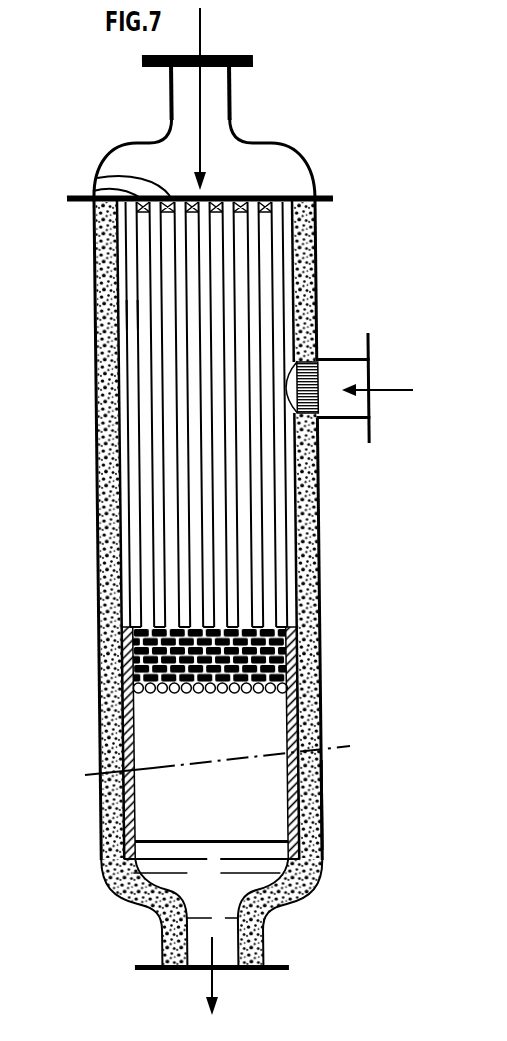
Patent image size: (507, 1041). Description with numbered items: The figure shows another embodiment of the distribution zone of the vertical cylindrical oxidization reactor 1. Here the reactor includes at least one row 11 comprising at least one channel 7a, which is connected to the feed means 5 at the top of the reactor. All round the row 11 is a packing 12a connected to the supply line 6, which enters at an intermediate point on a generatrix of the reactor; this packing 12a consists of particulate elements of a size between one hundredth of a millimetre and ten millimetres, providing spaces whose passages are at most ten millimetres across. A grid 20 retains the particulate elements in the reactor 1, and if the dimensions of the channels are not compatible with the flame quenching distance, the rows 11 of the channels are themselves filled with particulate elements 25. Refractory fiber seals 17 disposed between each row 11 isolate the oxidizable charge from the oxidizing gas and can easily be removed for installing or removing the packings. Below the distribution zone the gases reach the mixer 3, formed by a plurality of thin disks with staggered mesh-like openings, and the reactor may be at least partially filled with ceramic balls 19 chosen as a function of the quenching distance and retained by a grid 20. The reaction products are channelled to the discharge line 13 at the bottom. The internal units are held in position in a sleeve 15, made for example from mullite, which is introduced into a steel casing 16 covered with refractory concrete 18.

The oxidization reactor 1 is at (355, 263).
The mixer 3 is at (290, 653).
The feed means 5 is at (201, 25).
The supply line 6 is at (392, 390).
The channel 7a is at (187, 253).
The row 11 is at (133, 263).
The packing 12a is at (143, 313).
The discharge line 13 is at (215, 990).
The sleeve 15 is at (306, 775).
The steel casing 16 is at (323, 805).
The refractory fiber seals 17 is at (97, 178).
The refractory concrete 18 is at (325, 830).
The ceramic balls 19 is at (276, 778).
The grid 20 is at (323, 377).
The particulate elements 25 is at (160, 367).